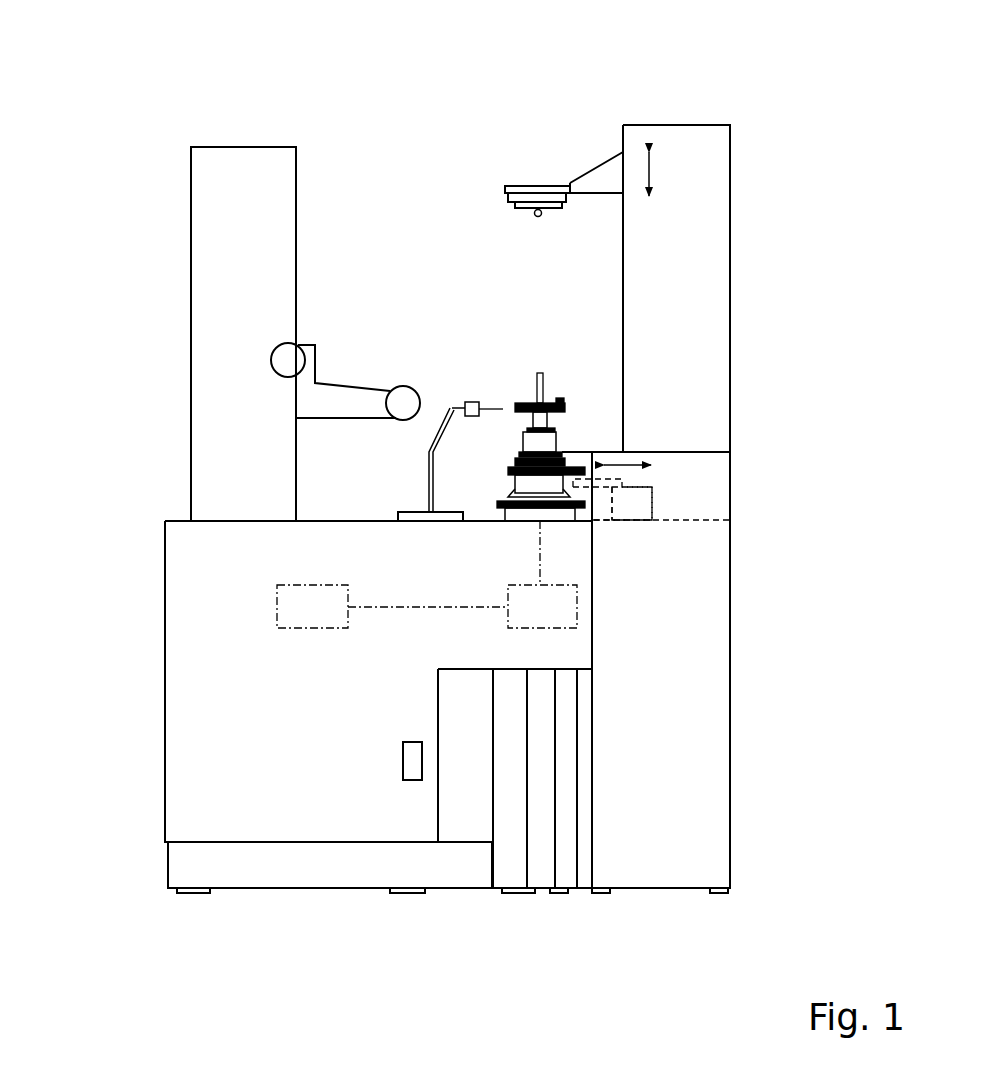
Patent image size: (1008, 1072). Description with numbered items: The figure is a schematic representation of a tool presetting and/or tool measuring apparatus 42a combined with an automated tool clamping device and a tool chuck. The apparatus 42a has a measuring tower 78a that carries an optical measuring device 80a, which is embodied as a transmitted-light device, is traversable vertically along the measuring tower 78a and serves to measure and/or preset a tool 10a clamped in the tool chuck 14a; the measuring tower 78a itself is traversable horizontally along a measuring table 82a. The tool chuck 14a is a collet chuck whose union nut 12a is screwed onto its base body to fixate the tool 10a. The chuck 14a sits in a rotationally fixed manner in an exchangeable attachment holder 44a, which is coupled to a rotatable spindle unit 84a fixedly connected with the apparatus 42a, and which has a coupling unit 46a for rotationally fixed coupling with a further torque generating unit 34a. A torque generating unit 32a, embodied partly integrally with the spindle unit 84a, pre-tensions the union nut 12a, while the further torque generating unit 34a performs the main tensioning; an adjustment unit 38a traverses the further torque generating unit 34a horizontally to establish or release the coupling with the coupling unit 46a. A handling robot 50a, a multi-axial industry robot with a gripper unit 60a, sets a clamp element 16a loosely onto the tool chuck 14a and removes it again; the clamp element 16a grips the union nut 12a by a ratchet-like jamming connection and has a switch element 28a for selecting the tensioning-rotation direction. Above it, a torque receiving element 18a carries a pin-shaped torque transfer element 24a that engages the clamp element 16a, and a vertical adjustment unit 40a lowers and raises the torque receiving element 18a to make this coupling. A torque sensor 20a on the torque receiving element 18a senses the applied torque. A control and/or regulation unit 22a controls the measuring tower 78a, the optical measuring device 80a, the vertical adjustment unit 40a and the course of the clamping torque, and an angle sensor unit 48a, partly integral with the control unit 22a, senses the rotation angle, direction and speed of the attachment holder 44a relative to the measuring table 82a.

The measuring tower 78a is at (140, 186).
The tool presetting and/or tool measuring apparatus 42a is at (312, 188).
The optical measuring device 80a is at (365, 375).
The handling robot 50a is at (433, 398).
The gripper unit 60a is at (497, 405).
The torque receiving element 18a is at (535, 190).
The vertical adjustment unit 40a is at (656, 178).
The torque sensor 20a is at (570, 195).
The torque transfer element 24a is at (545, 215).
The tool 10a is at (548, 390).
The union nut 12a is at (562, 398).
The switch element 28a is at (565, 410).
The clamp element 16a is at (552, 420).
The tool chuck 14a is at (558, 425).
The adjustment unit 38a is at (662, 500).
The further torque generating unit 34a is at (600, 505).
The attachment holder 44a is at (553, 490).
The coupling unit 46a is at (510, 522).
The torque generating unit 32a is at (487, 503).
The spindle unit 84a is at (500, 473).
The measuring table 82a is at (328, 515).
The control and/or regulation unit 22a is at (315, 612).
The angle sensor unit 48a is at (537, 620).